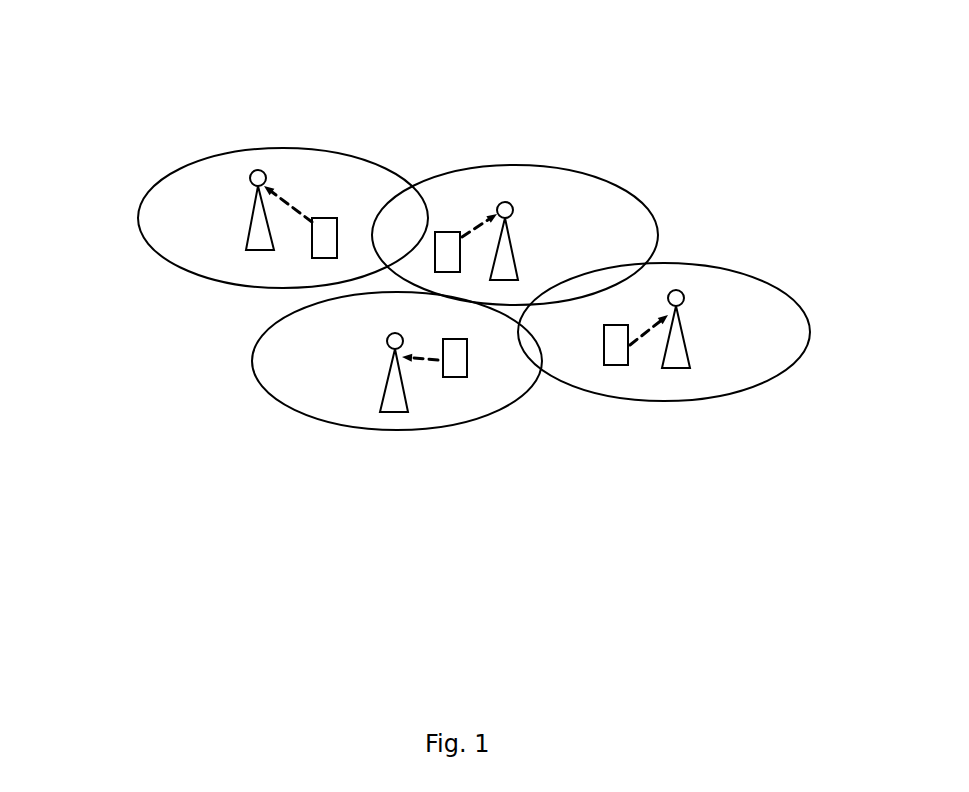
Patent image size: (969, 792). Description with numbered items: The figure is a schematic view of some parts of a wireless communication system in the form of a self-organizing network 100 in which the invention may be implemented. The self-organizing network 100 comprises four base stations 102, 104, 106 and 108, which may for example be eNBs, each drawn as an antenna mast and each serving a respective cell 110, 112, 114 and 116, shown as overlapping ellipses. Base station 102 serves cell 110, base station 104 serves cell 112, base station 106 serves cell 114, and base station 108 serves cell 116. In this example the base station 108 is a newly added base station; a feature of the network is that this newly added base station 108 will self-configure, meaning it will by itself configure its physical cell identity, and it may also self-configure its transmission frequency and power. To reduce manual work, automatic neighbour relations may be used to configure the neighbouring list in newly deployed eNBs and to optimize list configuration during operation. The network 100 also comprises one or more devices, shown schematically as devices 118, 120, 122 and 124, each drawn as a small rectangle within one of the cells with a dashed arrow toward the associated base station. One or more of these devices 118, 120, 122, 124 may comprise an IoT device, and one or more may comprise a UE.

The self-organizing network 100 is at (170, 90).
The base station 102 is at (250, 237).
The base station 104 is at (397, 392).
The base station 106 is at (680, 360).
The newly added base station 108 is at (508, 275).
The cell 110 is at (175, 203).
The cell 112 is at (300, 377).
The cell 114 is at (762, 318).
The cell 116 is at (540, 183).
The device 118 is at (325, 230).
The device 120 is at (458, 363).
The device 122 is at (617, 350).
The device 124 is at (442, 257).